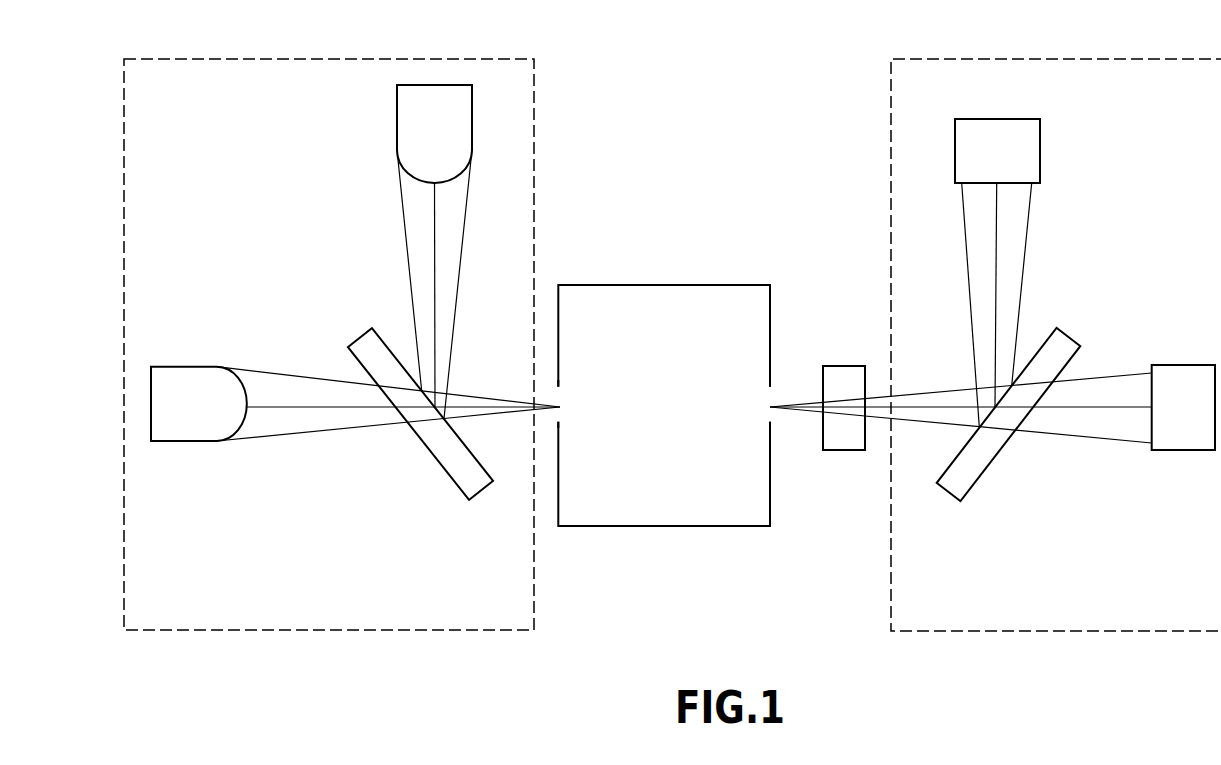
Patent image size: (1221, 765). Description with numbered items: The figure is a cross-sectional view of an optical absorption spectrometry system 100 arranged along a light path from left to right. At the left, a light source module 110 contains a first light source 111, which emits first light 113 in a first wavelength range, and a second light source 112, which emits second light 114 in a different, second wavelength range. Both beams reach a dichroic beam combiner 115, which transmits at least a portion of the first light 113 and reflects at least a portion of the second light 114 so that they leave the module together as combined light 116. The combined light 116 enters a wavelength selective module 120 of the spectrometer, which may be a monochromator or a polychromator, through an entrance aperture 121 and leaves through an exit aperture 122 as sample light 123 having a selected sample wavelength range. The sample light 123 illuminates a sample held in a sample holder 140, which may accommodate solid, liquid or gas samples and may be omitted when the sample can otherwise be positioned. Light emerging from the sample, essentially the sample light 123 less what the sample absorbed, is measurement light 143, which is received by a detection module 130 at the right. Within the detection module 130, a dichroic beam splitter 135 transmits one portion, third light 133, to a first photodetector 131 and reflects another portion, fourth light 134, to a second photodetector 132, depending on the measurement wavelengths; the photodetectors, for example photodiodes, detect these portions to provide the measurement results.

The optical absorption spectrometry system 100 is at (735, 66).
The light source module 110 is at (205, 120).
The first light source 111 is at (215, 415).
The second light source 112 is at (452, 137).
The first light 113 is at (303, 408).
The second light 114 is at (435, 228).
The dichroic beam combiner 115 is at (432, 453).
The combined light 116 is at (477, 397).
The wavelength selective module 120 is at (682, 333).
The entrance aperture 121 is at (558, 417).
The exit aperture 122 is at (770, 413).
The sample light 123 is at (797, 405).
The detection module 130 is at (1195, 114).
The first photodetector 131 is at (1198, 415).
The second photodetector 132 is at (1013, 161).
The third light 133 is at (1107, 410).
The fourth light 134 is at (997, 241).
The dichroic beam splitter 135 is at (968, 490).
The sample holder 140 is at (852, 450).
The measurement light 143 is at (913, 413).